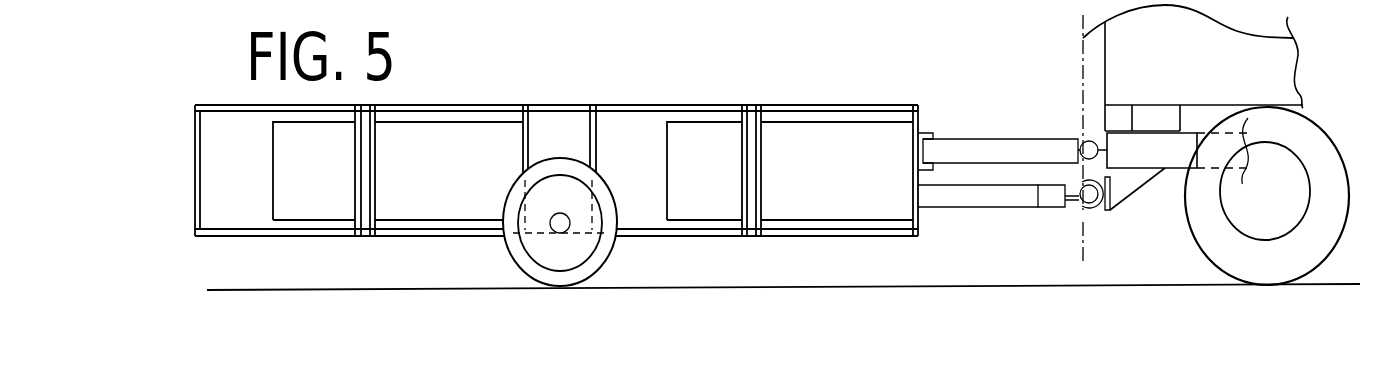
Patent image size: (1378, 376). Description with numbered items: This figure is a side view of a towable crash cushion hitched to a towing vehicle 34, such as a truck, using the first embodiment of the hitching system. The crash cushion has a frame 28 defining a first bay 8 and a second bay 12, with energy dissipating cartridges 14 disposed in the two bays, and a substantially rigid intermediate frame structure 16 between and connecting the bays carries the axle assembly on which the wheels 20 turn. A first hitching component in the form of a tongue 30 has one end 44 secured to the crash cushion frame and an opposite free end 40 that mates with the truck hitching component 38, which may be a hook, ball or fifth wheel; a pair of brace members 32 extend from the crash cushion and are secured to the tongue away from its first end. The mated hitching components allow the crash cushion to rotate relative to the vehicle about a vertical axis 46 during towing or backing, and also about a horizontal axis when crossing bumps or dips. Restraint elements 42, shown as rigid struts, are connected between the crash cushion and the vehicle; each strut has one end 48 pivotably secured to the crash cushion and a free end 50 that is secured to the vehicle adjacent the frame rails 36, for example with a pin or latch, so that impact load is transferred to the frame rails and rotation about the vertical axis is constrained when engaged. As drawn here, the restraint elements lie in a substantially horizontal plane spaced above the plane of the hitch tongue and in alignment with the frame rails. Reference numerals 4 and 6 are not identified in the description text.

The hitch frame 4 is at (918, 218).
The rear end wall 6 is at (195, 192).
The first bay 8 is at (546, 169).
The second bay 12 is at (752, 238).
The energy dissipating cartridge 14 is at (593, 171).
The frame structure 16 is at (568, 102).
The wheel 20 is at (597, 188).
The frame 28 is at (330, 238).
The tongue 30 is at (1048, 198).
The brace member 32 is at (977, 198).
The vehicle 34 is at (1216, 145).
The frame rail 36 is at (1152, 153).
The hitching component 38 is at (1097, 213).
The free end 40 is at (1075, 208).
The restraint element 42 is at (1025, 138).
The end 44 is at (913, 190).
The vertical axis 46 is at (1080, 47).
The end 48 is at (933, 150).
The free end 50 is at (1092, 143).